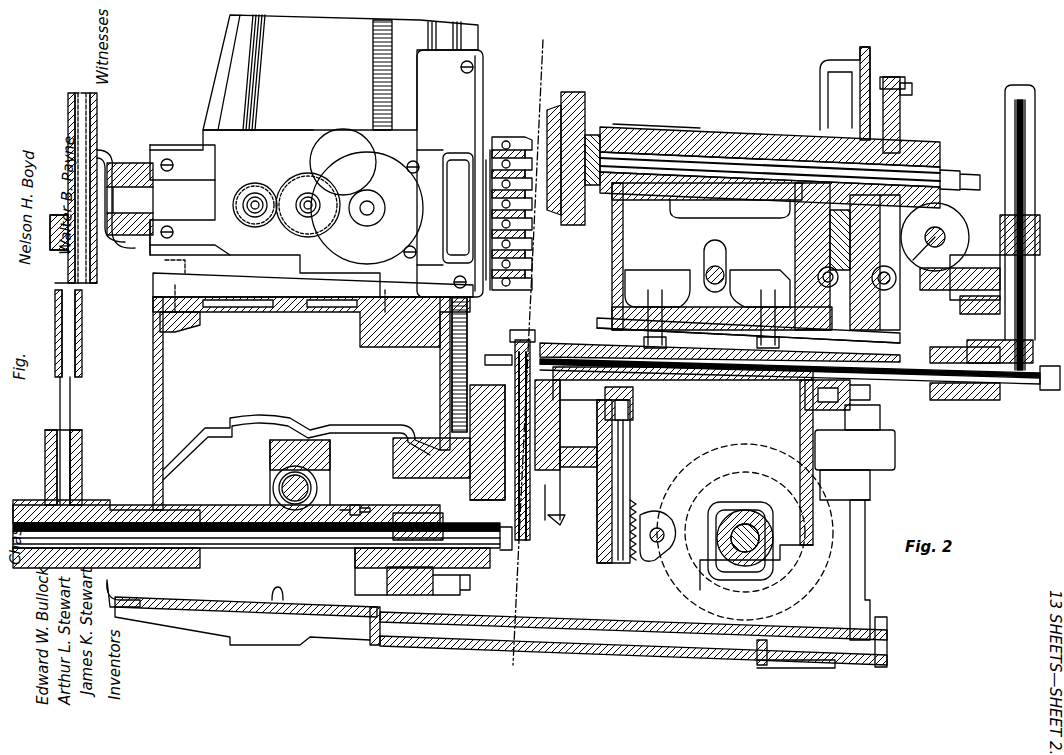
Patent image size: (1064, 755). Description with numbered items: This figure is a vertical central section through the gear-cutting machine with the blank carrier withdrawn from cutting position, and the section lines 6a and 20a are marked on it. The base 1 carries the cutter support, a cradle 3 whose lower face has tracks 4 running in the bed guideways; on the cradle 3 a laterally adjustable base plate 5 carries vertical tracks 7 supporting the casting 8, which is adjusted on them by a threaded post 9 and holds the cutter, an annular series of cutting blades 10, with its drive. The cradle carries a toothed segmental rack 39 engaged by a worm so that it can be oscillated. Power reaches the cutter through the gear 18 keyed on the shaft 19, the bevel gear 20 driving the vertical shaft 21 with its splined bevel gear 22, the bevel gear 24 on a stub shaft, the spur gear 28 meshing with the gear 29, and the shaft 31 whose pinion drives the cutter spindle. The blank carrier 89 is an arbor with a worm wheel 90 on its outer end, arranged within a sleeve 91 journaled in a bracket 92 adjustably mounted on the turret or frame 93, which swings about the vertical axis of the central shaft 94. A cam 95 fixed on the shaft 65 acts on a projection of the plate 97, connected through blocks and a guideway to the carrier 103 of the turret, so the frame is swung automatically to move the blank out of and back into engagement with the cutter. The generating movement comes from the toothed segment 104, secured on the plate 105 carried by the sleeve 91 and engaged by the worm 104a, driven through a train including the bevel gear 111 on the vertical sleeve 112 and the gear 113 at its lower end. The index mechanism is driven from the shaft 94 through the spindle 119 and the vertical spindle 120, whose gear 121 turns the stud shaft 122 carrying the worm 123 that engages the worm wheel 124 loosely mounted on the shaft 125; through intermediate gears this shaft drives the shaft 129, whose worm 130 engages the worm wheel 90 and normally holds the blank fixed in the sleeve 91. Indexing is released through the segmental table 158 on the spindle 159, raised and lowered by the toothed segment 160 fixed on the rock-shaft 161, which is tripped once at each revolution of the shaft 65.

The base 1 is at (501, 627).
The cradle 3 is at (155, 372).
The tracks 4 is at (190, 428).
The base plate 5 is at (343, 150).
The section line 6a is at (535, 345).
The tracks 7 is at (245, 78).
The casting 8 is at (284, 213).
The threaded post 9 is at (373, 78).
The cutting blades 10 is at (535, 228).
The gear 18 is at (98, 500).
The shaft 19 is at (298, 577).
The bevel gear 20 is at (80, 480).
The section line 20a is at (300, 460).
The vertical shaft 21 is at (70, 390).
The bevel gear 22 is at (116, 201).
The bevel gear 24 is at (108, 168).
The spur gear 28 is at (255, 193).
The gear 29 is at (308, 205).
The shaft 31 is at (368, 200).
The toothed segmental rack 39 is at (330, 450).
The shaft 65 is at (740, 510).
The blank carrier 89 is at (722, 135).
The worm wheel 90 is at (900, 110).
The sleeve 91 is at (760, 140).
The bracket 92 is at (722, 256).
The turret or frame 93 is at (845, 395).
The central shaft 94 is at (522, 338).
The cam 95 is at (760, 450).
The plate 97 is at (855, 535).
The carrier 103 is at (882, 418).
The toothed segment 104 is at (728, 250).
The worm 104a is at (815, 275).
The plate 105 is at (862, 312).
The bevel gear 111 is at (498, 356).
The vertical sleeve 112 is at (562, 470).
The gear 113 is at (556, 516).
The spindle 119 is at (550, 340).
The vertical spindle 120 is at (1010, 305).
The gear 121 is at (1040, 240).
The stud shaft 122 is at (975, 310).
The worm 123 is at (940, 295).
The worm wheel 124 is at (943, 210).
The shaft 125 is at (945, 232).
The shaft 129 is at (926, 239).
The worm 130 is at (895, 278).
The segmental table 158 is at (626, 396).
The spindle 159 is at (612, 505).
The toothed segment 160 is at (650, 560).
The rock-shaft 161 is at (660, 528).